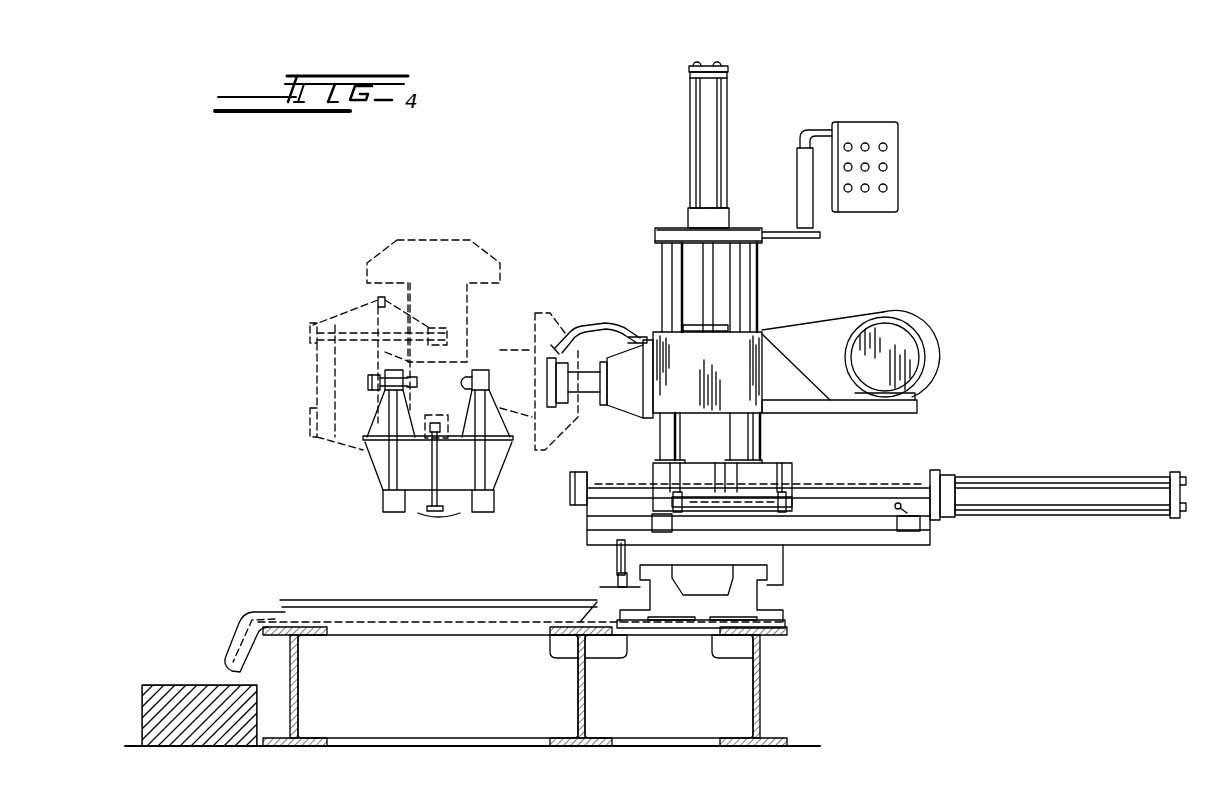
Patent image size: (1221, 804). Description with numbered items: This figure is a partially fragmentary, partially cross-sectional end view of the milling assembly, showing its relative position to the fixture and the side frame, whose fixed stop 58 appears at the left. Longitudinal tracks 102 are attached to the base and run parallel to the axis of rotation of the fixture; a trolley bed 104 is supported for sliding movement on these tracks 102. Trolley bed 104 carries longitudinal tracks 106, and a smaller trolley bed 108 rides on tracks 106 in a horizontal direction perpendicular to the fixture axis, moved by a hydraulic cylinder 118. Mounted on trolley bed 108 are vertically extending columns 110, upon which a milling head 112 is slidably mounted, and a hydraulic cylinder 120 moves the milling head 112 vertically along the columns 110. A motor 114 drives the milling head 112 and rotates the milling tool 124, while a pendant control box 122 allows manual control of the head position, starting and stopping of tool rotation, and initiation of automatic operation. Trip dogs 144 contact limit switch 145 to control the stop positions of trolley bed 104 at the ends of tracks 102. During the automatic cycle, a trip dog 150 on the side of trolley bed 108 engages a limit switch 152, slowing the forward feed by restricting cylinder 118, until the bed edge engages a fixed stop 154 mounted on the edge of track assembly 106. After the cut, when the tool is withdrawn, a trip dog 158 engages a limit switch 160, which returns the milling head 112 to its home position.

The fixed stop 58 is at (468, 385).
The longitudinal tracks 102 is at (770, 595).
The trolley bed 104 is at (788, 567).
The longitudinal tracks 106 is at (885, 490).
The trolley bed 108 is at (790, 465).
The columns 110 is at (662, 290).
The milling head 112 is at (618, 400).
The motor 114 is at (934, 340).
The hydraulic cylinder 118 is at (1065, 490).
The hydraulic cylinder 120 is at (728, 113).
The control box 122 is at (898, 150).
The milling tool 124 is at (545, 360).
The trip dogs 144 is at (617, 556).
The limit switch 145 is at (617, 580).
The trip dog 150 is at (678, 492).
The limit switch 152 is at (655, 520).
The fixed stop 154 is at (570, 492).
The trip dog 158 is at (790, 482).
The limit switch 160 is at (910, 535).